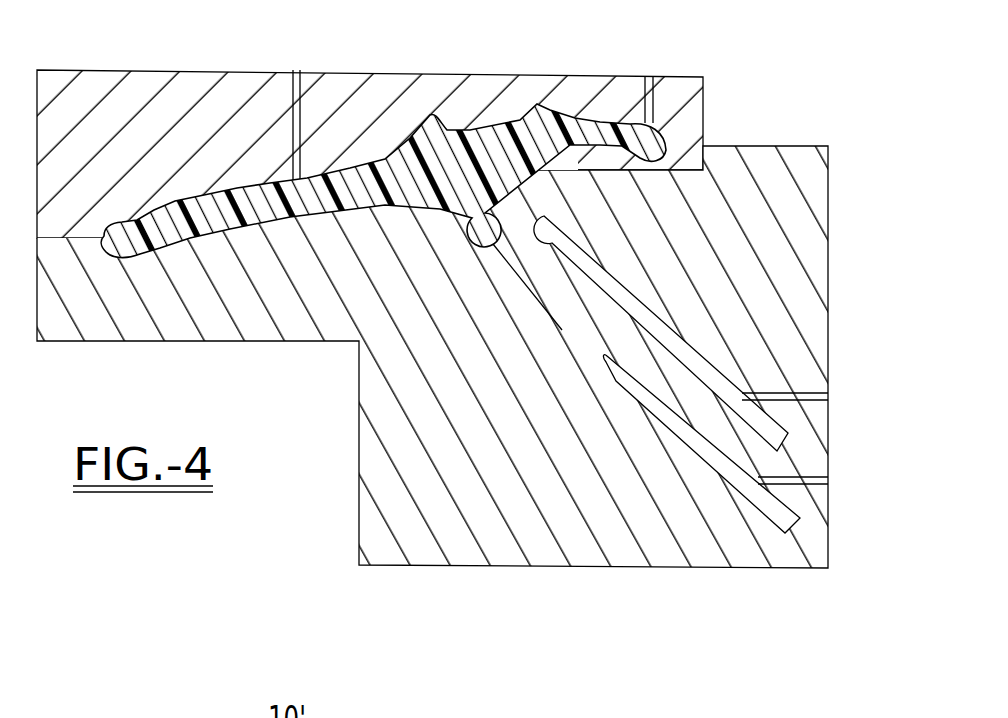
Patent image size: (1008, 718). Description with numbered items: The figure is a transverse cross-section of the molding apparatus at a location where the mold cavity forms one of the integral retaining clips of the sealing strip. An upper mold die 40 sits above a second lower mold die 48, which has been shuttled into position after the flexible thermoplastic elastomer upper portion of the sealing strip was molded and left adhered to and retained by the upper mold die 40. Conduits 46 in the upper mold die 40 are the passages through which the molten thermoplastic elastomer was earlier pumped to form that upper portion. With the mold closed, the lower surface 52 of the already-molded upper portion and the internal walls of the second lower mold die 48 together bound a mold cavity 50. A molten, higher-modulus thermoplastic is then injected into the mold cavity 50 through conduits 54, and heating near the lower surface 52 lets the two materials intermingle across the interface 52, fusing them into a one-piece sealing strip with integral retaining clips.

The upper mold die 40 is at (487, 76).
The conduits 46 is at (293, 72).
The second lower mold die 48 is at (790, 145).
The mold cavity 50 is at (598, 340).
The lower surface 52 is at (488, 247).
The conduits 54 is at (838, 396).